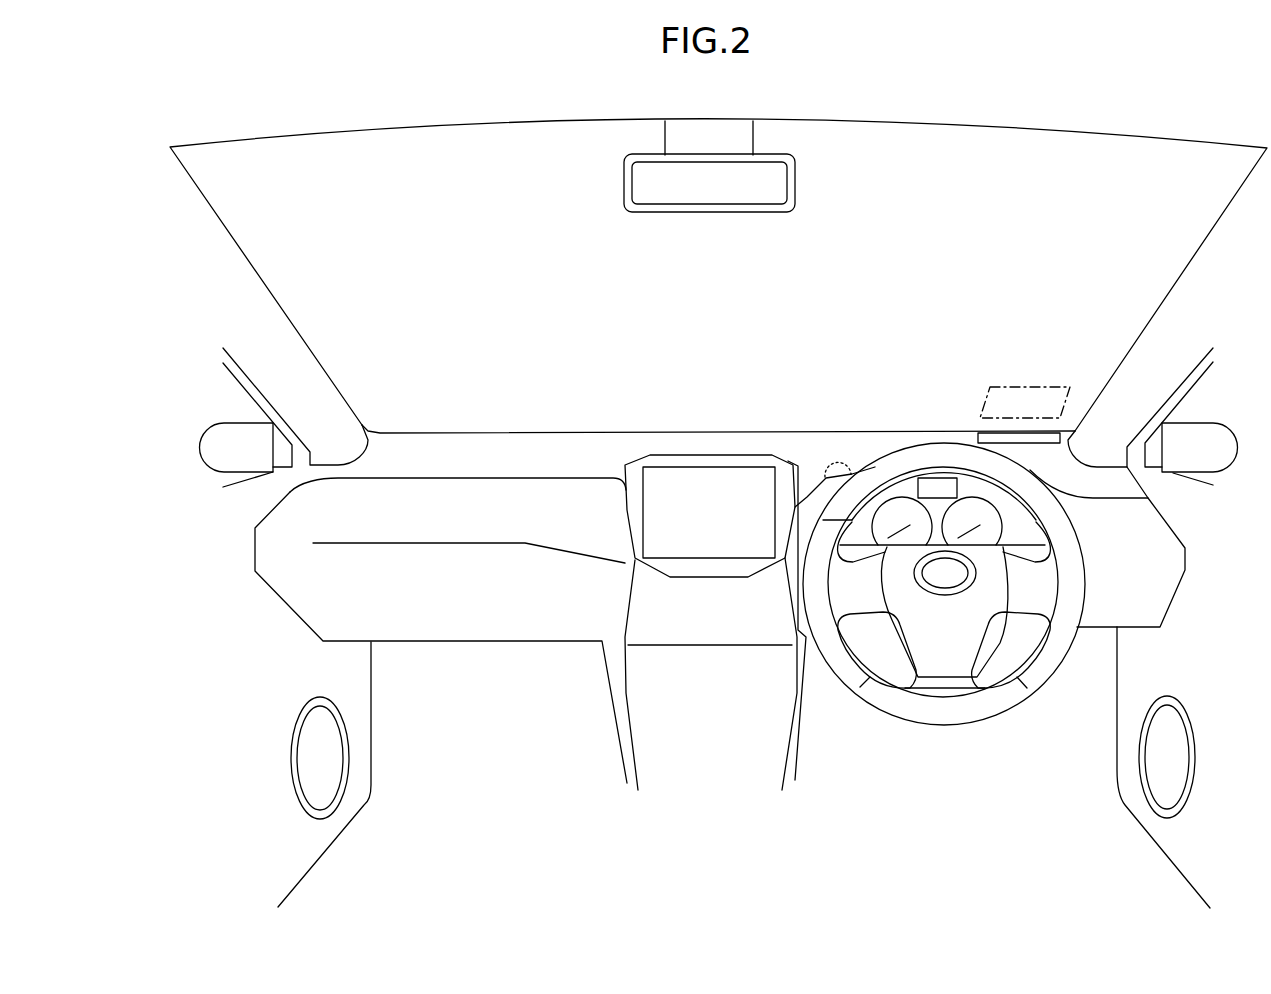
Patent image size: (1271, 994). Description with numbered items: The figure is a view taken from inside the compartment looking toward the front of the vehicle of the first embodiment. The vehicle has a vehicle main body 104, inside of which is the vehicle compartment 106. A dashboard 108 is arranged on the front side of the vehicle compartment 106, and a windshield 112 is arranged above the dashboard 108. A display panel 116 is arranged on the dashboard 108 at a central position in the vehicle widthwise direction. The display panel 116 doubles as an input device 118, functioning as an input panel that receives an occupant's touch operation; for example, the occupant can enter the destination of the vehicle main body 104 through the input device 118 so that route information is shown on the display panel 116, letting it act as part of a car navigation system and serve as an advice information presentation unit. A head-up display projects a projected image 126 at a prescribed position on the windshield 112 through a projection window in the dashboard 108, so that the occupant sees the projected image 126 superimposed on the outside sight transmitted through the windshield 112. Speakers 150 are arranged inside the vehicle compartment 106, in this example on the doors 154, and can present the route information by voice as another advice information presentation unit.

The vehicle main body 104 is at (258, 629).
The vehicle compartment 106 is at (568, 780).
The dashboard 108 is at (547, 453).
The windshield 112 is at (453, 147).
The display panel 116 is at (668, 448).
The input device 118 is at (728, 477).
The projected image 126 is at (1015, 385).
The speakers 150 is at (298, 795).
The doors 154 is at (327, 858).